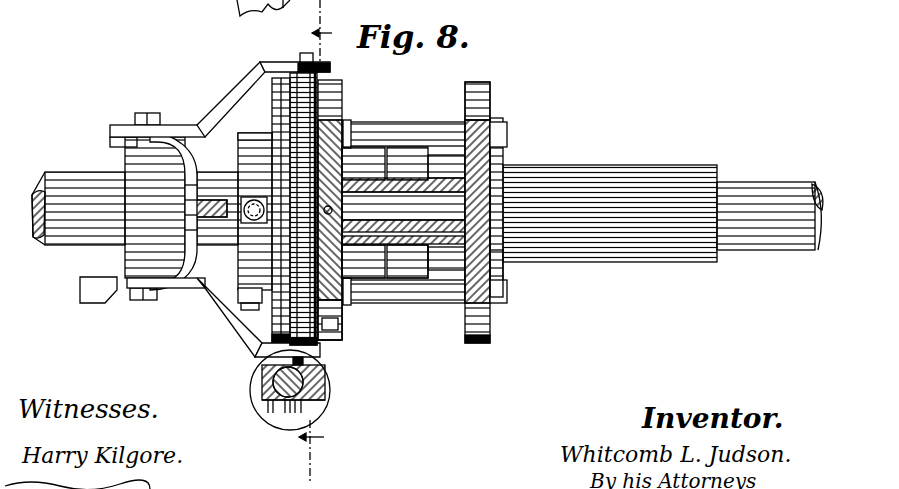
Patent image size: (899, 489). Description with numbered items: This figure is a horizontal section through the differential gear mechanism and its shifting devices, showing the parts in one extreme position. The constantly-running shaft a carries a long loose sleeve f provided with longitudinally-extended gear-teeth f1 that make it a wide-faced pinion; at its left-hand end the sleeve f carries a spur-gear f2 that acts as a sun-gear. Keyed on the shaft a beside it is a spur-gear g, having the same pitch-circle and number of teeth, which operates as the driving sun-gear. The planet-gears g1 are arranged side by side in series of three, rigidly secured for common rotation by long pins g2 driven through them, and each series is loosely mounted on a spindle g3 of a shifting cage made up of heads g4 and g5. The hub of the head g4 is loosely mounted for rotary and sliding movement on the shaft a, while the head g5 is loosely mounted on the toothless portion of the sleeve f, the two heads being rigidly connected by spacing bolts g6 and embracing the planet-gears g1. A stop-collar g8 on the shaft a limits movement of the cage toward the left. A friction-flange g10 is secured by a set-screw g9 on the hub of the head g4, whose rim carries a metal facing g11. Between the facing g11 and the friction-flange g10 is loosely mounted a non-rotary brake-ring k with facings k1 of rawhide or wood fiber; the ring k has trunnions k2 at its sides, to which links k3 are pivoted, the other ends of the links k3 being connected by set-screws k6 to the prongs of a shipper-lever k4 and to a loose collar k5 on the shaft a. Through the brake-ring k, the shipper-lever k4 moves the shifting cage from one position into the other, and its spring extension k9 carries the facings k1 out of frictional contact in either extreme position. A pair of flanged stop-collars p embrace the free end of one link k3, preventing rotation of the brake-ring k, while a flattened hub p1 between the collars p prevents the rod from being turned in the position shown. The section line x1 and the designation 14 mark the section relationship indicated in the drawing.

The shaft a is at (752, 190).
The sleeve f is at (438, 166).
The gear-teeth f1 is at (603, 193).
The spur-gear f2 is at (405, 157).
The spur-gear g is at (363, 157).
The planet-gears g1 is at (415, 248).
The pins g2 is at (508, 148).
The spindle g3 is at (498, 262).
The head g4 is at (330, 340).
The head g5 is at (490, 87).
The spacing bolts g6 is at (458, 118).
The stop-collar g8 is at (198, 162).
The set-screw g9 is at (243, 293).
The friction-flange g10 is at (259, 140).
The metal facing g11 is at (322, 103).
The brake-ring k is at (250, 340).
The facings k1 is at (290, 127).
The trunnions k2 is at (303, 55).
The links k3 is at (208, 108).
The shipper-lever k4 is at (125, 170).
The loose collar k5 is at (123, 243).
The set-screws k6 is at (140, 113).
The spring extension k9 is at (80, 297).
The flanged stop-collars p is at (332, 393).
The flattened hub p1 is at (267, 403).
The pin x1 is at (313, 397).
The section line X- 14 is at (316, 241).